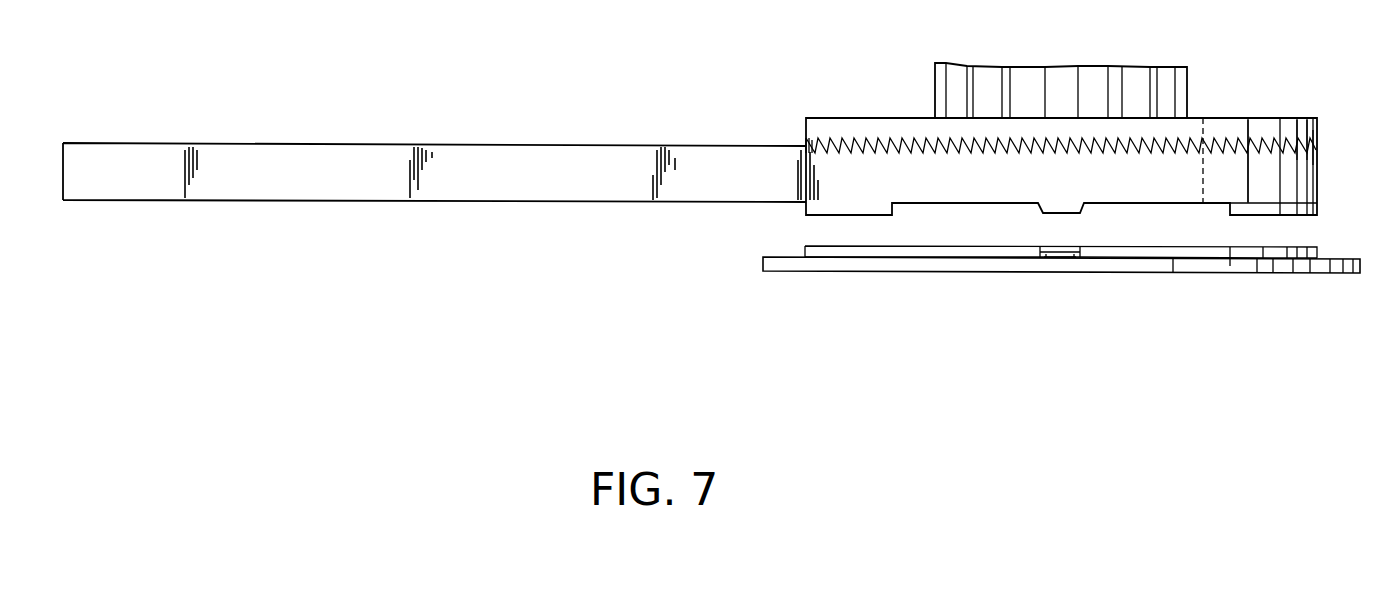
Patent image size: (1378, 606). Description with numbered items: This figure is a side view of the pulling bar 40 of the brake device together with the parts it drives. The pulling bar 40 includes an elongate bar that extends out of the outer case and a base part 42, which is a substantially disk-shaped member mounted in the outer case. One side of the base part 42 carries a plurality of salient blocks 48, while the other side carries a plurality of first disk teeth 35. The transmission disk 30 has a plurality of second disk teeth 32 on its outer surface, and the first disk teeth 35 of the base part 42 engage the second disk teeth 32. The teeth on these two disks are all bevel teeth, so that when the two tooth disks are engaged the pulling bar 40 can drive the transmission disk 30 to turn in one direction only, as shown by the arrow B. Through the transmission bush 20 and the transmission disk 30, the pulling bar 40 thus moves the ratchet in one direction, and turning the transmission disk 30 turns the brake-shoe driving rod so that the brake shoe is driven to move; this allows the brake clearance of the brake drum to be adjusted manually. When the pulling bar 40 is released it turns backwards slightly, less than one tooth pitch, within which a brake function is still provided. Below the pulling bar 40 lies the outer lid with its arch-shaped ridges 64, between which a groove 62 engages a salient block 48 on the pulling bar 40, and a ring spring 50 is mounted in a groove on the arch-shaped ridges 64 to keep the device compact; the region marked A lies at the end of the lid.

The transmission bush 20 is at (1165, 77).
The transmission disk 30 is at (1280, 127).
The second disk teeth 32 is at (861, 140).
The first disk teeth 35 is at (1250, 147).
The pulling bar 40 is at (296, 212).
The base part 42 is at (1313, 163).
The salient blocks 48 is at (1307, 210).
The ring spring 50 is at (1075, 262).
The groove 62 is at (1048, 259).
The arch-shaped ridges 64 is at (857, 248).
The direction A is at (1325, 278).
The arrow B is at (1082, 43).